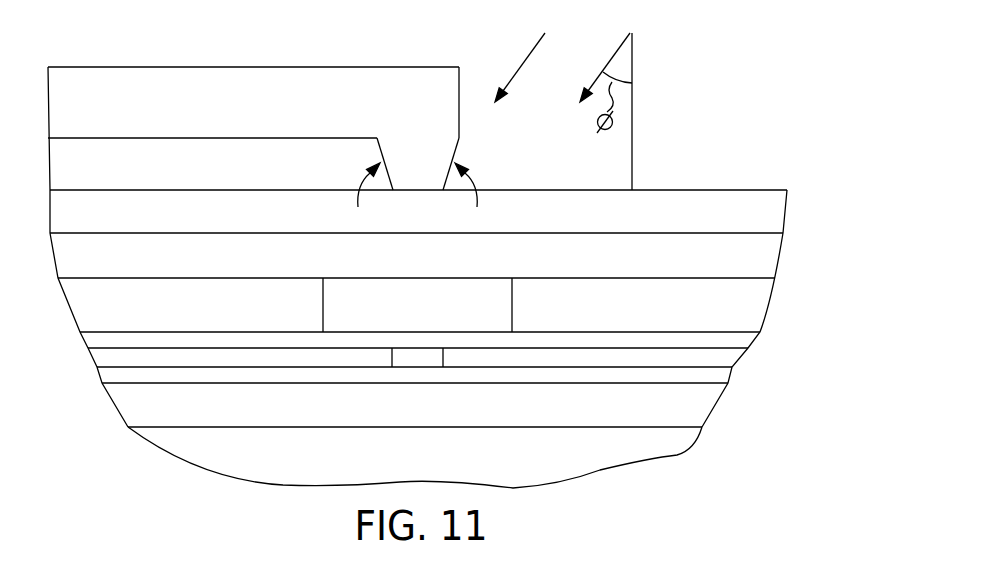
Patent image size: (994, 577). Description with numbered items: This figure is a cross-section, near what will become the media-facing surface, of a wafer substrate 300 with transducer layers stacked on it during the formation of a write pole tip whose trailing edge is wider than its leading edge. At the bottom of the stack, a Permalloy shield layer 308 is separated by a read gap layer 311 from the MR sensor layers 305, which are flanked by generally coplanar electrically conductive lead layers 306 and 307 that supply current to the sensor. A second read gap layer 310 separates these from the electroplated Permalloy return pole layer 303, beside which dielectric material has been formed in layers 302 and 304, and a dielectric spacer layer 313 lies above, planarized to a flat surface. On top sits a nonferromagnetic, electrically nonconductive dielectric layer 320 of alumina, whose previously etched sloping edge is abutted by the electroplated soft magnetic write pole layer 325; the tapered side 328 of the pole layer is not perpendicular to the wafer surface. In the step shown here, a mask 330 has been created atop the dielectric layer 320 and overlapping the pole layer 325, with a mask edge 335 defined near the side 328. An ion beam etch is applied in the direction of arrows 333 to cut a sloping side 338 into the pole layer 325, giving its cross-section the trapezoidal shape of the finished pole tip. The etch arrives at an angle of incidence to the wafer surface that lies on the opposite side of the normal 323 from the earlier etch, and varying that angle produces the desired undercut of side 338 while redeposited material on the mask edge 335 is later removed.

The wafer substrate 300 is at (324, 466).
The dielectric layer 302 is at (139, 317).
The return pole layer 303 is at (396, 317).
The second shield layer region 304 is at (660, 317).
The MR sensor layers 305 is at (418, 367).
The lead layer 306 is at (270, 360).
The lead layer 307 is at (560, 358).
The shield layer 308 is at (489, 417).
The read gap layer 310 is at (203, 347).
The read gap layer 311 is at (598, 383).
The dielectric spacer layer 313 is at (619, 269).
The dielectric layer 320 is at (216, 179).
The normal 323 is at (632, 137).
The write pole layer 325 is at (397, 177).
The side 328 is at (358, 199).
The mask 330 is at (122, 121).
The arrows 333 is at (517, 68).
The mask edge 335 is at (447, 104).
The sloping side 338 is at (475, 199).